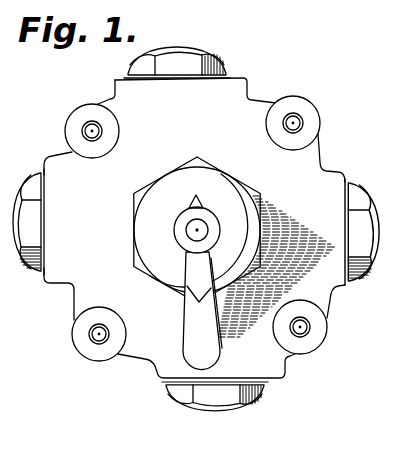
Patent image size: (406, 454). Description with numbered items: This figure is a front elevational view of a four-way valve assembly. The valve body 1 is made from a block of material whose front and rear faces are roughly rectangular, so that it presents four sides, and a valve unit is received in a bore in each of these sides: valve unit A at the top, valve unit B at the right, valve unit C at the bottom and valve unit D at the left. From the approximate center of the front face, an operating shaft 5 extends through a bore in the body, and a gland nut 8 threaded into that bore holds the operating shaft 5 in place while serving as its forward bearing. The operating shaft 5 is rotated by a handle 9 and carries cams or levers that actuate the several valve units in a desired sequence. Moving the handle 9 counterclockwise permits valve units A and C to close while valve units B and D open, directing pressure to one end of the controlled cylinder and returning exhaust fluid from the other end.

The valve body 1 is at (323, 148).
The operating shaft 5 is at (196, 230).
The gland nut 8 is at (193, 172).
The handle 9 is at (187, 327).
The valve unit A is at (177, 47).
The valve unit B is at (384, 204).
The valve unit C is at (177, 409).
The valve unit D is at (11, 178).